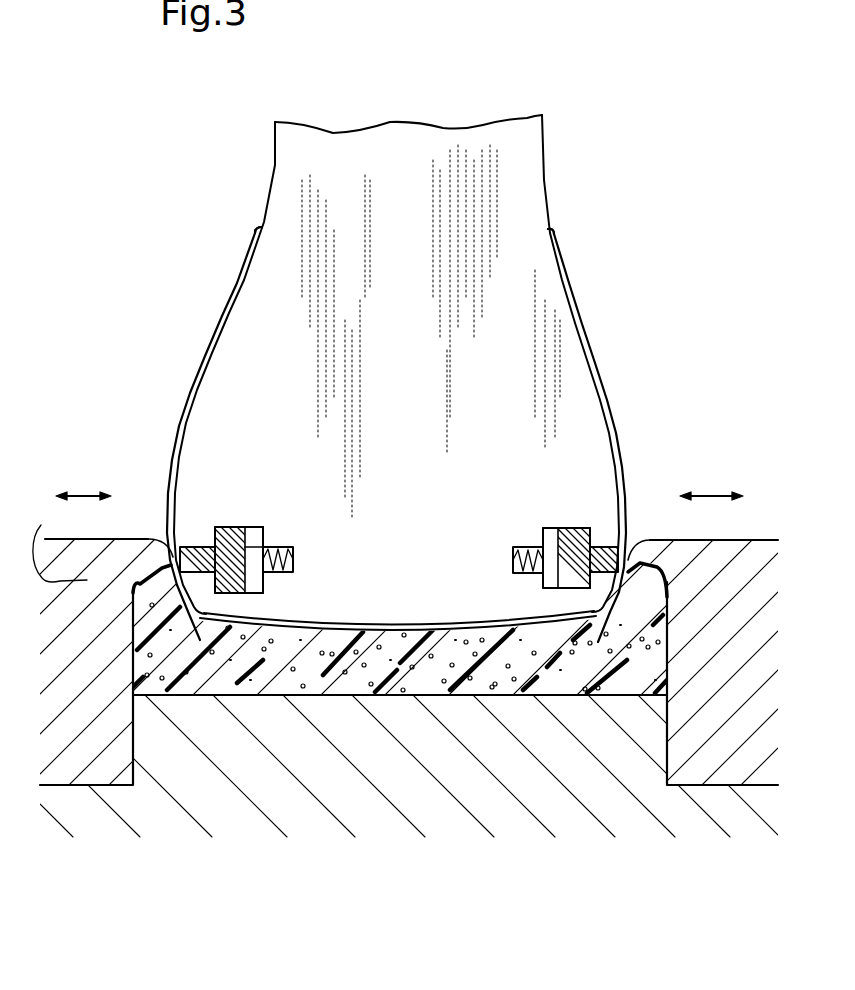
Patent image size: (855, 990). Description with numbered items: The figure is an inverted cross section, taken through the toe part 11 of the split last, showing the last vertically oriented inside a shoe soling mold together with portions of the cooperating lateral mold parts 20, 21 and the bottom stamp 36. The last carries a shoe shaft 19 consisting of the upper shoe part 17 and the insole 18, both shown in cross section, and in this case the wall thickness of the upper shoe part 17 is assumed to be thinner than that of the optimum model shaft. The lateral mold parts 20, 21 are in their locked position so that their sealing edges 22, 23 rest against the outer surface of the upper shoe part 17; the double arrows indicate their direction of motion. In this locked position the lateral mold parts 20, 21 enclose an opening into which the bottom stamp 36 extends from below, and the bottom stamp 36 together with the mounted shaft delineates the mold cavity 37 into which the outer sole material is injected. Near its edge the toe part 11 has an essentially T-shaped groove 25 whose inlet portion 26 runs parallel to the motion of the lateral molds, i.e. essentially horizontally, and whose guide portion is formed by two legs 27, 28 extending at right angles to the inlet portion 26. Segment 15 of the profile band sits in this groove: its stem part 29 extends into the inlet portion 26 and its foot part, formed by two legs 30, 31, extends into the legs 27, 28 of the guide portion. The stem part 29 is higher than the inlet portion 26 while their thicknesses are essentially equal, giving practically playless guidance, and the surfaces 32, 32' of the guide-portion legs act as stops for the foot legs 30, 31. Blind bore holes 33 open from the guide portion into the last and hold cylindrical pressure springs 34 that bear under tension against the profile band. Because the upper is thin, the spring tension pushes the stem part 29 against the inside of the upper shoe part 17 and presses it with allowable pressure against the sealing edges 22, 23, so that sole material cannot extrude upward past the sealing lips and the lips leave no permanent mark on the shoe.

The toe part 11 is at (512, 217).
The segment of profile band 15 is at (247, 583).
The upper shoe part 17 is at (560, 255).
The insole 18 is at (398, 630).
The shoe shaft 19 is at (582, 281).
The lateral mold part 20 is at (106, 643).
The lateral mold part 21 is at (755, 562).
The sealing edge 22 is at (158, 553).
The sealing edge 23 is at (640, 557).
The groove 25 is at (266, 605).
The inlet portion 26 is at (204, 575).
The leg of guide portion 27 is at (215, 527).
The leg of guide portion 28 is at (216, 582).
The stem part 29 is at (195, 546).
The leg of foot part 30 is at (235, 527).
The leg of foot part 31 is at (243, 595).
The stop surface 32 is at (282, 516).
The stop surface 32' is at (197, 513).
The blind bore hole 33 is at (527, 547).
The cylindrical pressure spring 34 is at (293, 555).
The bottom stamp 36 is at (383, 782).
The mold cavity 37 is at (472, 653).